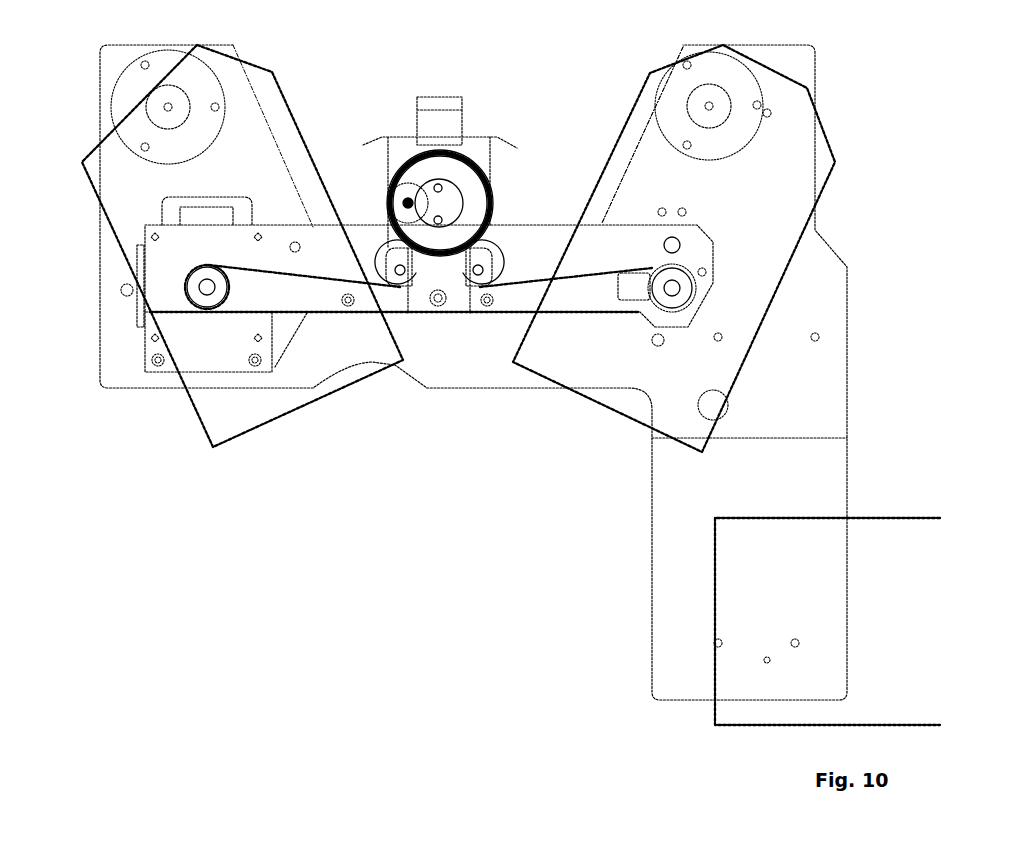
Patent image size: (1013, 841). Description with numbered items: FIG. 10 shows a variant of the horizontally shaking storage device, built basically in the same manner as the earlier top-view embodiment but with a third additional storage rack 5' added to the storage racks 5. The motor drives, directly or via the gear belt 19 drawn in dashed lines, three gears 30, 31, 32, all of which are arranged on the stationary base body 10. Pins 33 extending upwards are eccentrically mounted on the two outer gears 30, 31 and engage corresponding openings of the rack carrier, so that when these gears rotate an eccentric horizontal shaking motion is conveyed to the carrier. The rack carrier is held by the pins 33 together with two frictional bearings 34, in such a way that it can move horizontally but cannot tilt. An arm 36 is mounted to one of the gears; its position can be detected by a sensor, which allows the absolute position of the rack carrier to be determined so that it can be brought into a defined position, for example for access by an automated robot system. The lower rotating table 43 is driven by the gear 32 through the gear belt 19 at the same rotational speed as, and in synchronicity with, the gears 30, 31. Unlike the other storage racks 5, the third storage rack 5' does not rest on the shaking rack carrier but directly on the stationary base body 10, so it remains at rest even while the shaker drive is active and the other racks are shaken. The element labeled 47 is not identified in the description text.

The storage rack 5 is at (458, 231).
The third additional storage rack 5' is at (827, 594).
The stationary base body 10 is at (630, 283).
The gear belt 19 is at (307, 313).
The gear 30 is at (207, 290).
The gear 31 is at (676, 305).
The gear 32 is at (427, 187).
The pin 33 is at (207, 292).
The frictional bearing 34 is at (120, 117).
The arm 36 is at (607, 165).
The lower rotating table 43 is at (473, 167).
The drive shaft 47 is at (407, 203).